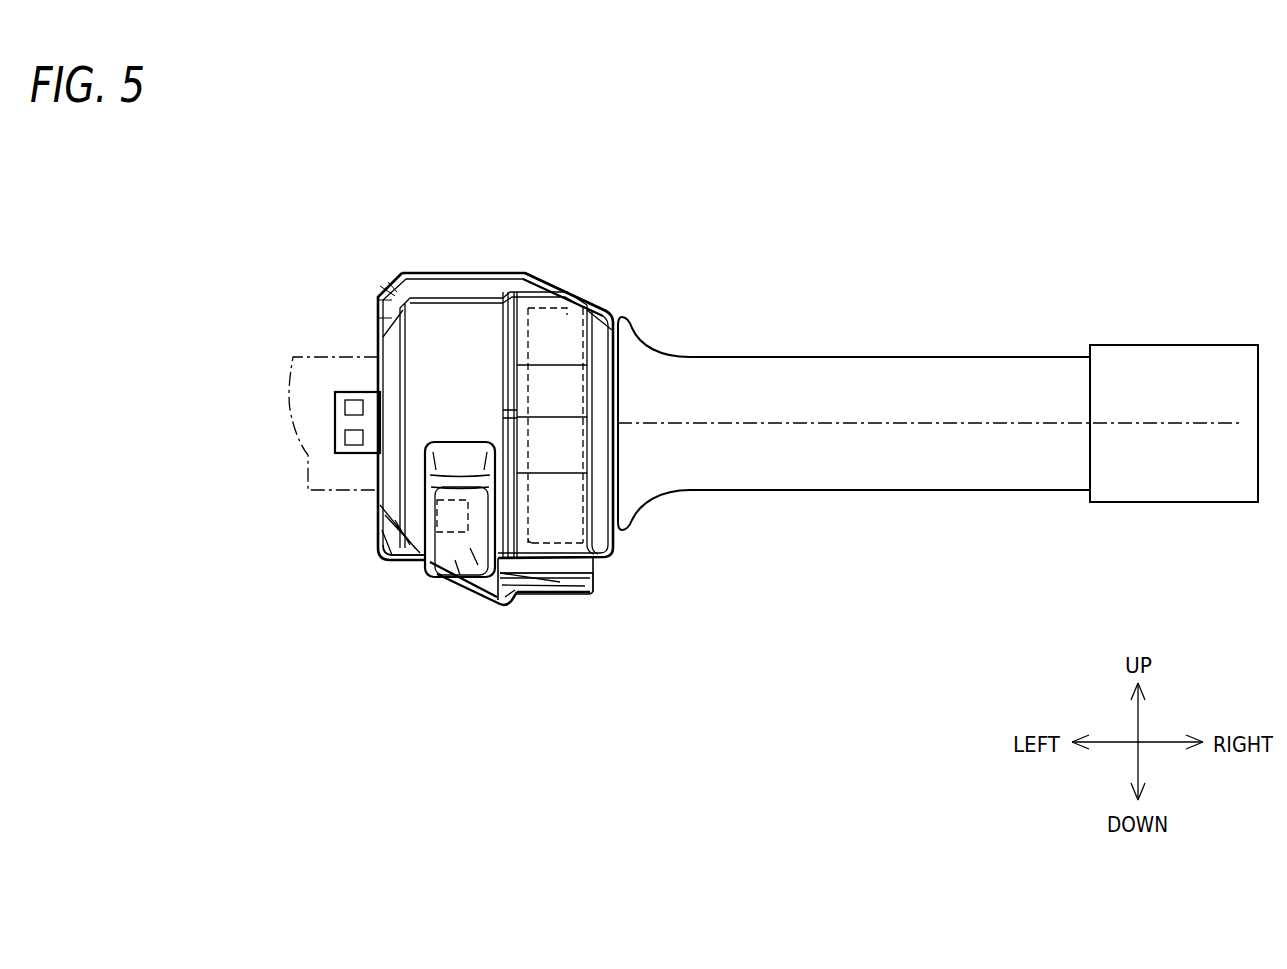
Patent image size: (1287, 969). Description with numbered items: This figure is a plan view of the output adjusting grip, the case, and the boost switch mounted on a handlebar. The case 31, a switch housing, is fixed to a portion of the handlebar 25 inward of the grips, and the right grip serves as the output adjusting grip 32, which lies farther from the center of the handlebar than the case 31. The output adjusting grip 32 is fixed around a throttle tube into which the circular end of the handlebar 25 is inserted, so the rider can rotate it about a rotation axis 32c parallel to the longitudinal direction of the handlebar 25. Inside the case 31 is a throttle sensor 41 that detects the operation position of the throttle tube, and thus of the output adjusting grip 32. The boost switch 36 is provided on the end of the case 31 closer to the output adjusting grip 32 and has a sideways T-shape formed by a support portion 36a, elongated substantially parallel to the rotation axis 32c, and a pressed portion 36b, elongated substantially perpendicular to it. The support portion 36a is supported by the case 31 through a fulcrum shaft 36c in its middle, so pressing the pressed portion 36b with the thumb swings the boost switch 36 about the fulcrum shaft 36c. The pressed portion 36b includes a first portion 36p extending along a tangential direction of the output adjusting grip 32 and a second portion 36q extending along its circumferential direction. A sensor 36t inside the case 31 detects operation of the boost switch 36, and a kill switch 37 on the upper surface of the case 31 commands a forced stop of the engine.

The handlebar 25 is at (327, 352).
The case 31 is at (470, 315).
The output adjusting grip 32 is at (865, 380).
The rotation axis 32c is at (983, 425).
The boost switch 36 is at (519, 625).
The support portion 36a is at (484, 605).
The pressed portion 36b is at (558, 602).
The fulcrum shaft 36c is at (460, 582).
The first portion 36p is at (590, 590).
The second portion 36q is at (595, 568).
The sensor 36t is at (380, 530).
The kill switch 37 is at (445, 578).
The throttle sensor 41 is at (568, 292).